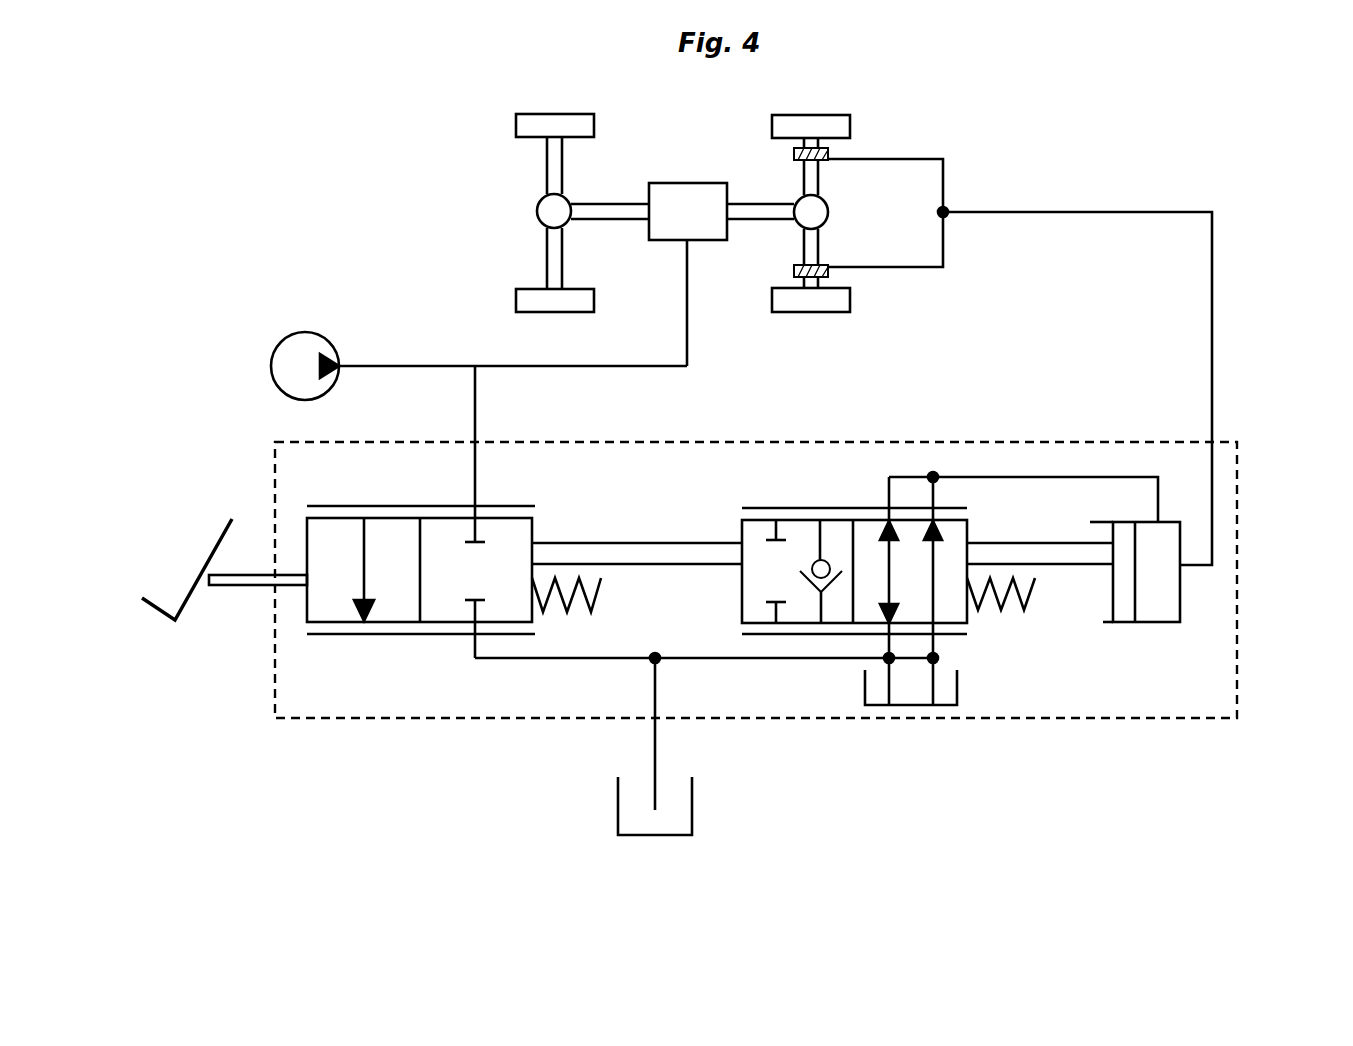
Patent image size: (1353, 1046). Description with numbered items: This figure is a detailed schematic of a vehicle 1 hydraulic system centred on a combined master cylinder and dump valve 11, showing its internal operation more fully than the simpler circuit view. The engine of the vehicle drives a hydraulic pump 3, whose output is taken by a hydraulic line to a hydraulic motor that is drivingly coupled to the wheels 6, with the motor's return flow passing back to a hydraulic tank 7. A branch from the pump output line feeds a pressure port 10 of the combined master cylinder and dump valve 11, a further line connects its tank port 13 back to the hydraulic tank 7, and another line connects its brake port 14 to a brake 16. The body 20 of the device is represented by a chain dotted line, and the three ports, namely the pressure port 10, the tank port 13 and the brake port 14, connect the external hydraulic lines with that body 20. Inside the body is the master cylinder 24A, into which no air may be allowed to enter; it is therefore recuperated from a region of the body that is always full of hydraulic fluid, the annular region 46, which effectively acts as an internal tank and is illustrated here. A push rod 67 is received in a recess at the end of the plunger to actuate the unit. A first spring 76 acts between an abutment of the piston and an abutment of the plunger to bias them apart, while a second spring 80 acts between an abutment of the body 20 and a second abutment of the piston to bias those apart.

The vehicle 1 is at (866, 87).
The hydraulic pump 3 is at (282, 341).
The wheels 6 is at (516, 123).
The hydraulic tank 7 is at (618, 812).
The pressure port 10 is at (478, 441).
The combined master cylinder and dump valve 11 is at (801, 580).
The tank port 13 is at (658, 720).
The brake port 14 is at (1213, 443).
The brake 16 is at (794, 154).
The body 20 is at (1238, 541).
The master cylinder 24A is at (1163, 608).
The annular region 46 is at (865, 690).
The push rod 67 is at (232, 579).
The first spring 76 is at (592, 612).
The second spring 80 is at (1025, 607).